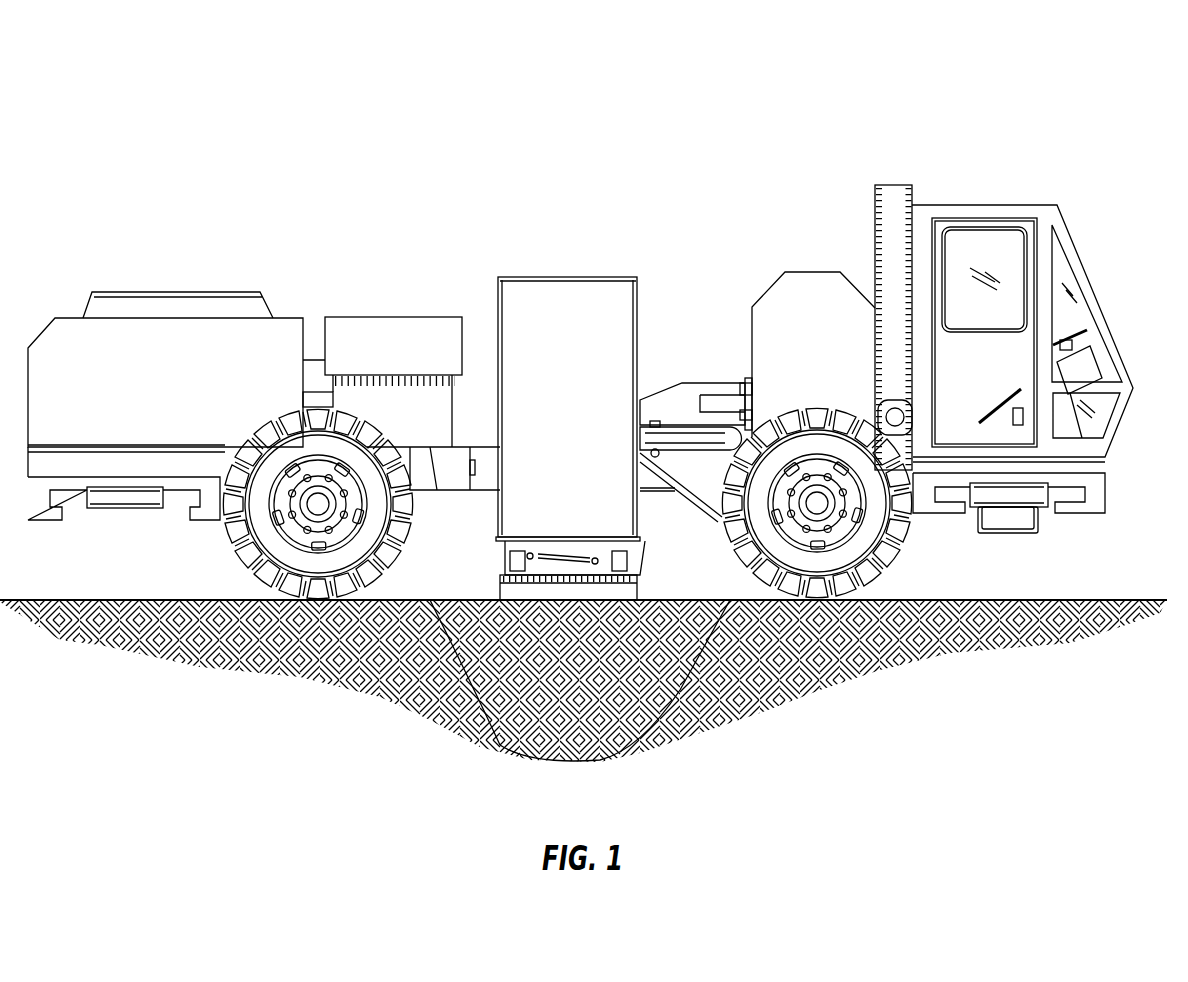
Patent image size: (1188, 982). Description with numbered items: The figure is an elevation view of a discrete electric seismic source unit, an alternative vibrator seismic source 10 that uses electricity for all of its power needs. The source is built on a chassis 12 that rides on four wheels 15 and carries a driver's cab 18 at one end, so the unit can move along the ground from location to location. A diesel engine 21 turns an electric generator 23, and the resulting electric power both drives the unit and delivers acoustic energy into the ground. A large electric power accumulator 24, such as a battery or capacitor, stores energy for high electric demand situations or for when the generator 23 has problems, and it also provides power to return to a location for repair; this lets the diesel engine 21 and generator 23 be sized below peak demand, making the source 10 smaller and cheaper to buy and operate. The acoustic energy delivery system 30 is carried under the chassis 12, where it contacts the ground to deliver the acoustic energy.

The vibrator seismic source 10 is at (163, 86).
The chassis 12 is at (488, 493).
The wheels 15 is at (233, 552).
The driver's cab 18 is at (1098, 298).
The diesel engine 21 is at (172, 397).
The electric generator 23 is at (409, 361).
The electric power accumulator 24 is at (828, 360).
The acoustic energy delivery system 30 is at (638, 593).